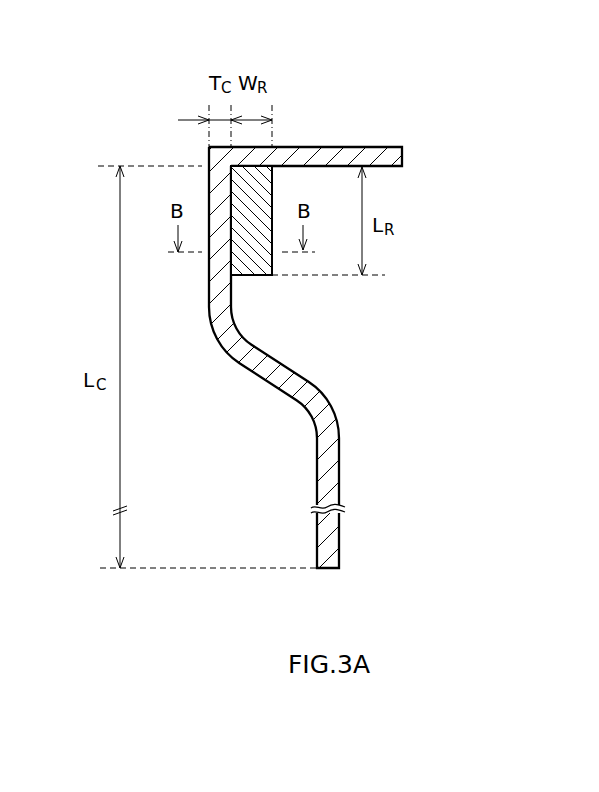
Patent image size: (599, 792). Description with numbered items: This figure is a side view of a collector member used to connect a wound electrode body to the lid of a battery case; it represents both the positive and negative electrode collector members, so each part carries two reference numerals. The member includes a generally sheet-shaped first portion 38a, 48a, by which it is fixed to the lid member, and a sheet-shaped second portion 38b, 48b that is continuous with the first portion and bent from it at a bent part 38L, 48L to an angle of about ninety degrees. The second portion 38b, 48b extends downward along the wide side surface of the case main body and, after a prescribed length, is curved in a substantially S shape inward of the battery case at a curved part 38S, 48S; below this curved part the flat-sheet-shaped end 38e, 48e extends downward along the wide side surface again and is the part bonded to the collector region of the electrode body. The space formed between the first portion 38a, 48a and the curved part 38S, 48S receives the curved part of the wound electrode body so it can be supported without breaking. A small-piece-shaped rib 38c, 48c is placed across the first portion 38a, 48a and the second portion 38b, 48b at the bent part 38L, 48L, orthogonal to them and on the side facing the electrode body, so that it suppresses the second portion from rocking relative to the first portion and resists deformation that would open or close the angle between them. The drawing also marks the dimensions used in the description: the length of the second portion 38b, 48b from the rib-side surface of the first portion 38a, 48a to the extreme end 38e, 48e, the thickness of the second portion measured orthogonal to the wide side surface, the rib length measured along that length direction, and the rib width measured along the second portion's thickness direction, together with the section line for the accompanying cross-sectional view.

The bent part 38L is at (299, 321).
The bent part 48L is at (299, 321).
The first portion 38a is at (307, 117).
The first portion 48a is at (330, 147).
The second portion 38b is at (336, 357).
The second portion 48b is at (336, 357).
The rib 38c is at (266, 254).
The rib 48c is at (252, 277).
The curved part 38S is at (352, 372).
The curved part 48S is at (342, 422).
The end 38e is at (396, 503).
The end 48e is at (339, 535).